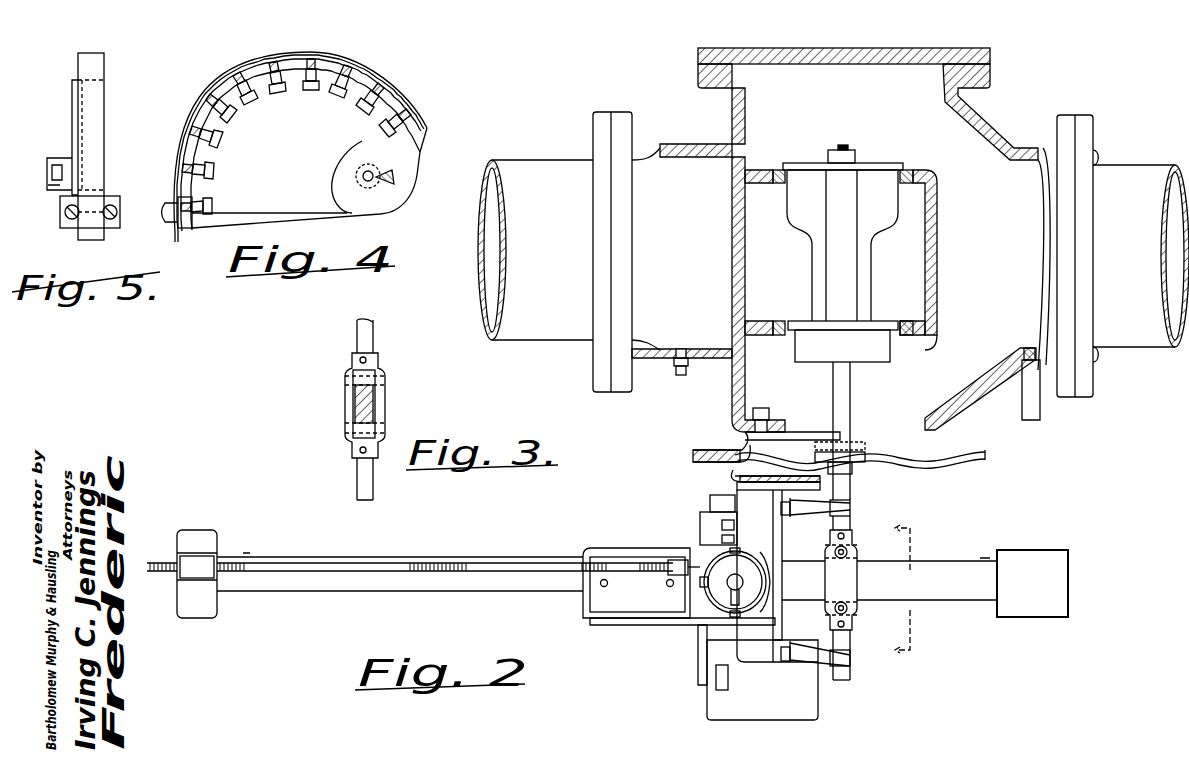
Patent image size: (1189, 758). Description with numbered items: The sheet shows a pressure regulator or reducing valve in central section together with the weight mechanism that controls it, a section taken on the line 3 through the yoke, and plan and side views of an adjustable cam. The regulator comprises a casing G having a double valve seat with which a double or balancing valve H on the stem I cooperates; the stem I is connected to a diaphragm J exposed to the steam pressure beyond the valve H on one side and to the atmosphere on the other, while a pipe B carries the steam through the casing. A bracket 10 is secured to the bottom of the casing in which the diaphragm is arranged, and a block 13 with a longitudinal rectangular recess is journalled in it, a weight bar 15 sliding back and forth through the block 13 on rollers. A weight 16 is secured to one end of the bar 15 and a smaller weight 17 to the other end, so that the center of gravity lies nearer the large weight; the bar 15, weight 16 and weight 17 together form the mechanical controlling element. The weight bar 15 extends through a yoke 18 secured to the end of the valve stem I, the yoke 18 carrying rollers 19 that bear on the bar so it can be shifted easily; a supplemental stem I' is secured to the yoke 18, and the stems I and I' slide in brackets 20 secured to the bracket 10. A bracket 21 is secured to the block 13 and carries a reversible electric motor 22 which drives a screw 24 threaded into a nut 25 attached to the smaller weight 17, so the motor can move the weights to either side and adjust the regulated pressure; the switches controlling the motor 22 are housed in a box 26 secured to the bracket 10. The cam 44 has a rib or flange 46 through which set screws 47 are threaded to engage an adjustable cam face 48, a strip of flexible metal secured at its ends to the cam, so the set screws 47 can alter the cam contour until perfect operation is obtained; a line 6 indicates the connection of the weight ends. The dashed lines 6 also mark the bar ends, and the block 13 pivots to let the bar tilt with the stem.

In FIG. 2, the inlet pipe B is at (548, 152).
In FIG. 2, the casing G is at (1028, 160).
In FIG. 2, the double or balancing valve H is at (822, 277).
In FIG. 2, the stem I is at (849, 431).
In FIG. 3, the stem I is at (347, 338).
In FIG. 2, the supplemental stem I' is at (851, 687).
In FIG. 3, the supplemental stem I' is at (345, 484).
In FIG. 2, the diaphragm J is at (940, 457).
In FIG. 2, the section line 3— 3 is at (910, 588).
In FIG. 2, the connection lines 6 is at (243, 553).
In FIG. 2, the bracket 10 is at (745, 526).
In FIG. 2, the block 13 is at (645, 557).
In FIG. 2, the weight bar 15 is at (356, 594).
In FIG. 3, the weight bar 15 is at (355, 410).
In FIG. 2, the weight 16 is at (1048, 617).
In FIG. 2, the smaller weight 17 is at (213, 608).
In FIG. 2, the yoke 18 is at (852, 582).
In FIG. 2, the rollers 19 is at (852, 554).
In FIG. 3, the rollers 19 is at (370, 382).
In FIG. 2, the brackets 20 is at (816, 506).
In FIG. 2, the bracket 21 is at (648, 606).
In FIG. 2, the electric motor 22 is at (722, 592).
In FIG. 2, the screw 24 is at (442, 562).
In FIG. 2, the nut 25 is at (186, 572).
In FIG. 2, the box 26 is at (779, 712).
In FIG. 4, the cam 44 is at (295, 178).
In FIG. 4, the rib or flange 46 is at (322, 88).
In FIG. 5, the rib or flange 46 is at (72, 116).
In FIG. 4, the set screws 47 is at (316, 62).
In FIG. 4, the adjustable cam face 48 is at (252, 80).
In FIG. 5, the adjustable cam face 48 is at (92, 56).